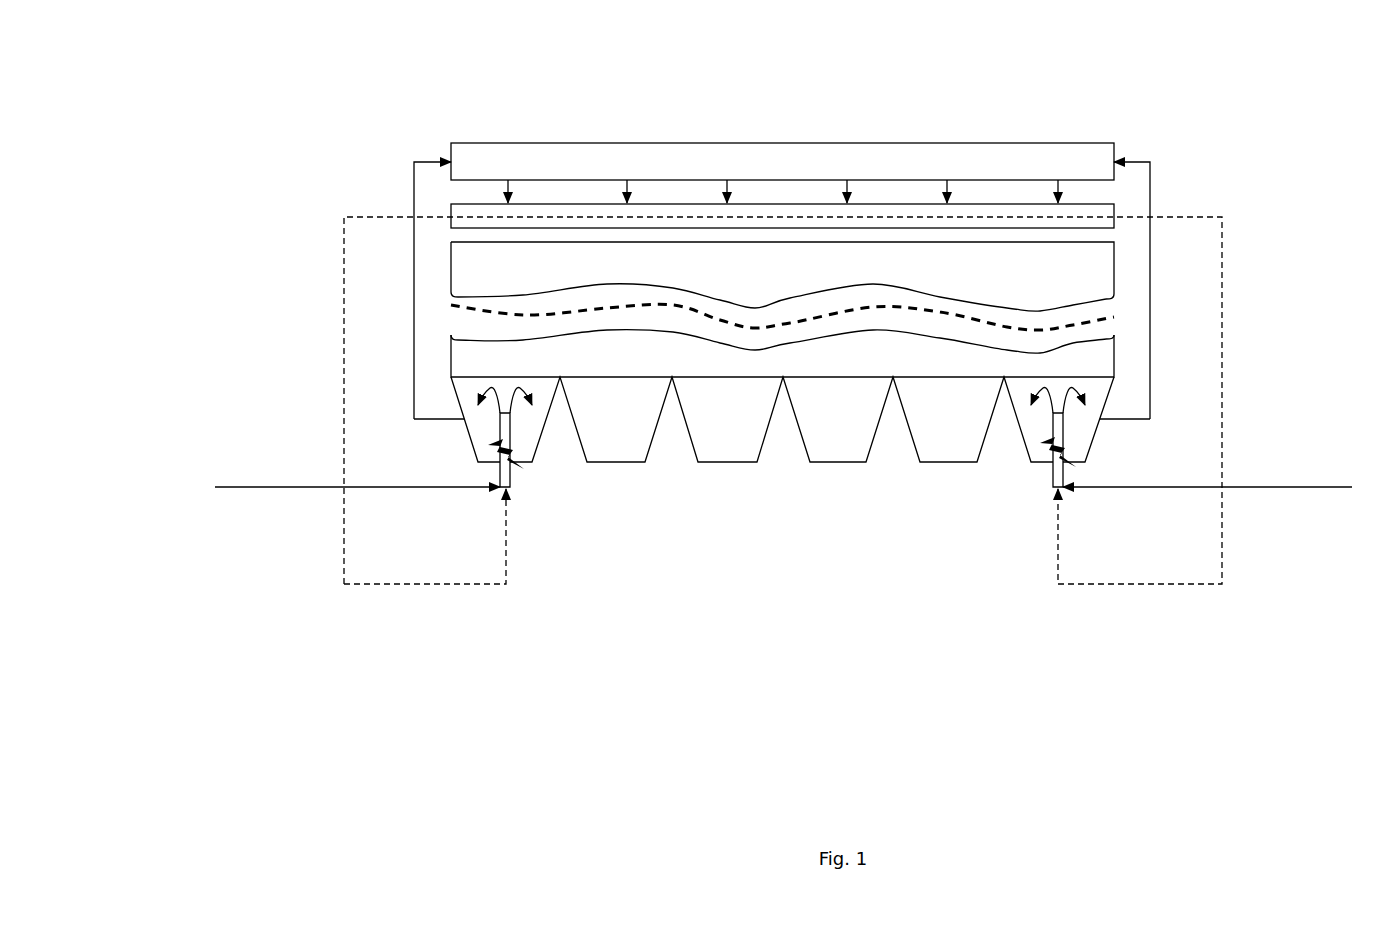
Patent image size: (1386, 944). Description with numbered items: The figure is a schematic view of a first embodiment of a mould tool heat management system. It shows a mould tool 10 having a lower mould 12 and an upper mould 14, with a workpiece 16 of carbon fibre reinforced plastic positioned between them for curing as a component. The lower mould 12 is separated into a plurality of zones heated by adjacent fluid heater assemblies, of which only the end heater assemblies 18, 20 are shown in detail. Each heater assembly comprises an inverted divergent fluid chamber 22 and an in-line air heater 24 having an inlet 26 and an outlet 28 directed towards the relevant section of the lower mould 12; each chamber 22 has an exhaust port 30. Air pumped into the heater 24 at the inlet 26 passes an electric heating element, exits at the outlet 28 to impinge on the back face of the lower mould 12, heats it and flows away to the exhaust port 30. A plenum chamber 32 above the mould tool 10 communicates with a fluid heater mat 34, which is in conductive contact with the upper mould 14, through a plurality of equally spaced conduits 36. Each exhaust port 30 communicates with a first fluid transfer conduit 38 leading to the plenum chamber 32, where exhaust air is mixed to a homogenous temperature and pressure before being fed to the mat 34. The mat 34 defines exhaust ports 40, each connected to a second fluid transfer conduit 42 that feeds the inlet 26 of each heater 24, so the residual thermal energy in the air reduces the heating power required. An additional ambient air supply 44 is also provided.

The mould tool 10 is at (270, 307).
The lower mould 12 is at (879, 365).
The upper mould 14 is at (740, 285).
The workpiece 16 is at (957, 315).
The end heater assembly 18 is at (448, 441).
The end heater assembly 20 is at (1020, 488).
The inverted divergent fluid chamber 22 is at (545, 427).
The in-line air heater 24 is at (512, 473).
The inlet 26 is at (503, 491).
The outlet 28 is at (510, 423).
The exhaust port 30 is at (457, 422).
The plenum chamber 32 is at (740, 174).
The fluid heater mat 34 is at (740, 227).
The conduits 36 is at (508, 185).
The first fluid transfer conduit 38 is at (413, 200).
The exhaust port 40 is at (1115, 218).
The second fluid transfer conduit 42 is at (1222, 332).
The ambient air supply 44 is at (1313, 488).